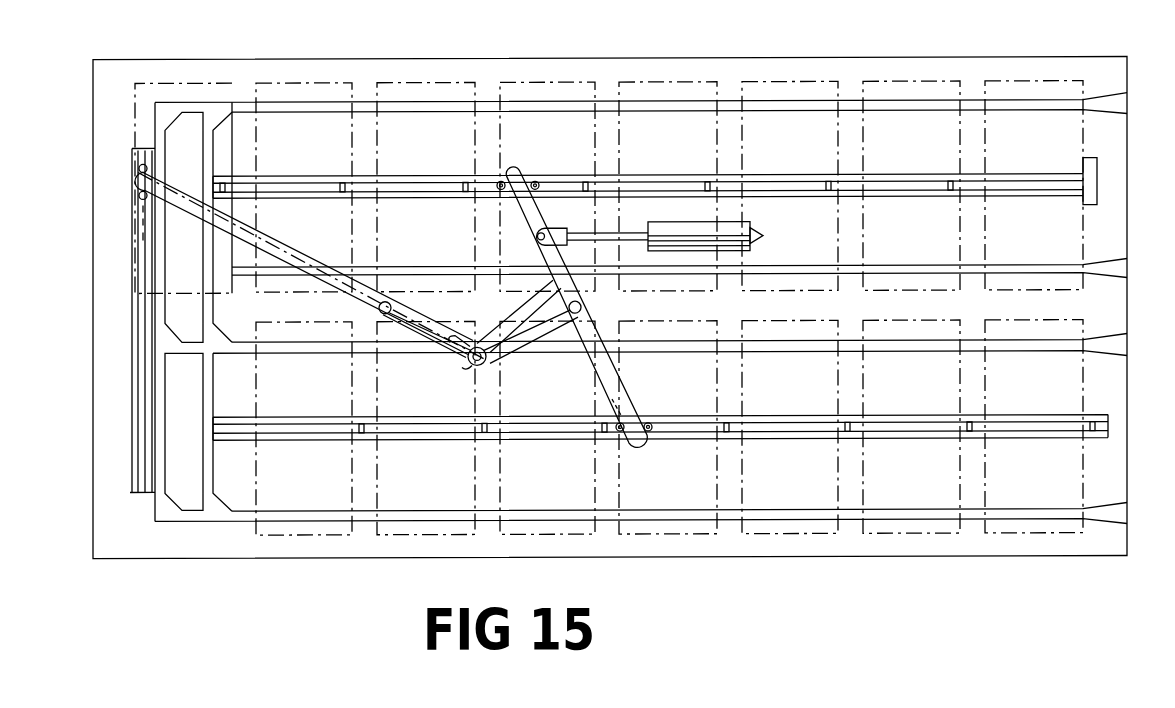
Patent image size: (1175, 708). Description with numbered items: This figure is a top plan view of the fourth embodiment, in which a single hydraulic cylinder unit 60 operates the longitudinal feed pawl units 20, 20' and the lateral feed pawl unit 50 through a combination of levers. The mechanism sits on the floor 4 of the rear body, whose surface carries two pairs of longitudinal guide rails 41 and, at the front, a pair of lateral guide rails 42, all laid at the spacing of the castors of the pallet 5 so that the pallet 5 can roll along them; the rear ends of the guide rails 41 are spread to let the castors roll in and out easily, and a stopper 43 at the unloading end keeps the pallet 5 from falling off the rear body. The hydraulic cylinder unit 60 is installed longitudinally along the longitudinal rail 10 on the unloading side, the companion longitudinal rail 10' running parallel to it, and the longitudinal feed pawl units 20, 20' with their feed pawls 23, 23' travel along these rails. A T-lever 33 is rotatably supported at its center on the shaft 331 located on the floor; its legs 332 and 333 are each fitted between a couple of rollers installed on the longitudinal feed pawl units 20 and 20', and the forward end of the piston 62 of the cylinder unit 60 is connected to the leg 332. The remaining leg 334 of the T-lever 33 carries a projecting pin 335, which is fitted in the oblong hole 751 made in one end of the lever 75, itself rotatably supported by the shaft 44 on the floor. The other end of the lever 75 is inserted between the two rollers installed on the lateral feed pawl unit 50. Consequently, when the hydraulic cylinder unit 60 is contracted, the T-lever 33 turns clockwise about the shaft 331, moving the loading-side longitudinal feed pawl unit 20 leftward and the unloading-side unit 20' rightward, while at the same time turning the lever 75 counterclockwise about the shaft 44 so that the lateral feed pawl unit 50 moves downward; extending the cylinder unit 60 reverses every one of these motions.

The floor 4 is at (1108, 552).
The pallet 5 is at (343, 83).
The longitudinal rail 10 is at (660, 459).
The longitudinal rail 10' is at (648, 160).
The longitudinal feed pawl unit 20 is at (660, 455).
The longitudinal feed pawl unit 20' is at (648, 163).
The feed pawl 23 is at (576, 343).
The feed pawl 23' is at (561, 165).
The T-lever 33 is at (572, 312).
The guide rail 41 is at (390, 108).
The guide rail 42 is at (162, 368).
The stopper 43 is at (1097, 168).
The shaft 44 is at (386, 302).
The lateral feed pawl unit 50 is at (140, 238).
The hydraulic cylinder unit 60 is at (752, 224).
The piston 62 is at (658, 227).
The lever 75 is at (273, 250).
The shaft 331 is at (572, 315).
The leg 332 is at (564, 225).
The leg 333 is at (628, 403).
The leg 334 is at (510, 338).
The projecting pin 335 is at (467, 364).
The oblong hole 751 is at (453, 340).